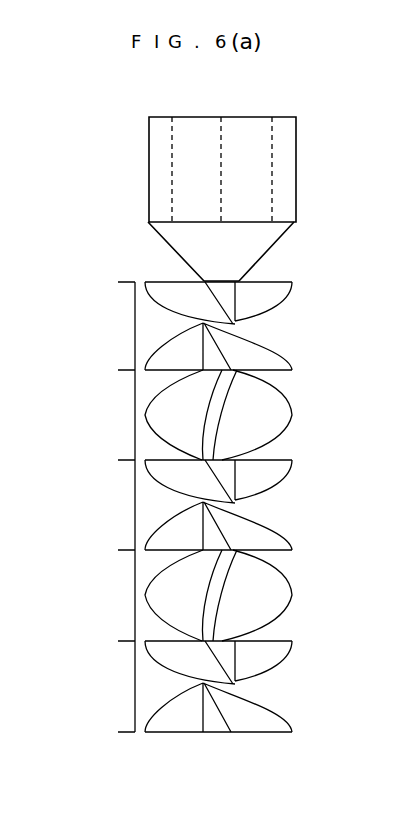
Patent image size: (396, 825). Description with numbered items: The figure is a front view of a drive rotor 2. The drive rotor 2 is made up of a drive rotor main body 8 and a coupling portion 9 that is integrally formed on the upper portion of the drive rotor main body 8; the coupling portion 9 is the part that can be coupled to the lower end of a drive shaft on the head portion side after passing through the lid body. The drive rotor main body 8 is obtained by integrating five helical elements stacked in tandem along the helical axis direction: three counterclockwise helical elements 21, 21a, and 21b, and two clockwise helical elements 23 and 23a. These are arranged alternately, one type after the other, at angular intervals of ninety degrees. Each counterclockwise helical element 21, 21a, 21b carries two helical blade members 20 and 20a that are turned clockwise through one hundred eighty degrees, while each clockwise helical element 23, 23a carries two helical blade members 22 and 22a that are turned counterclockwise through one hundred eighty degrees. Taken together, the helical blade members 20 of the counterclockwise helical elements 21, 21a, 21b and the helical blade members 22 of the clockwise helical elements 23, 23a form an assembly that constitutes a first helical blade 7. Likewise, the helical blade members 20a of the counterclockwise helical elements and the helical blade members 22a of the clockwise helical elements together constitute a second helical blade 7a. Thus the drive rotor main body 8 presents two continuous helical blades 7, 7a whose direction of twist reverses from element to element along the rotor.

The drive rotor 2 is at (235, 102).
The coupling portion 9 is at (257, 180).
The first helical blade 7 is at (276, 274).
The second helical blade 7a is at (170, 272).
The drive rotor main body 8 is at (93, 312).
The counterclockwise helical element 21 is at (194, 310).
The clockwise helical element 23 is at (194, 399).
The counterclockwise helical element 21a is at (191, 489).
The clockwise helical element 23a is at (191, 579).
The counterclockwise helical element 21b is at (191, 669).
The helical blade member 20 is at (270, 293).
The helical blade member 20a is at (267, 358).
The helical blade member 22 is at (177, 401).
The helical blade member 22a is at (263, 423).